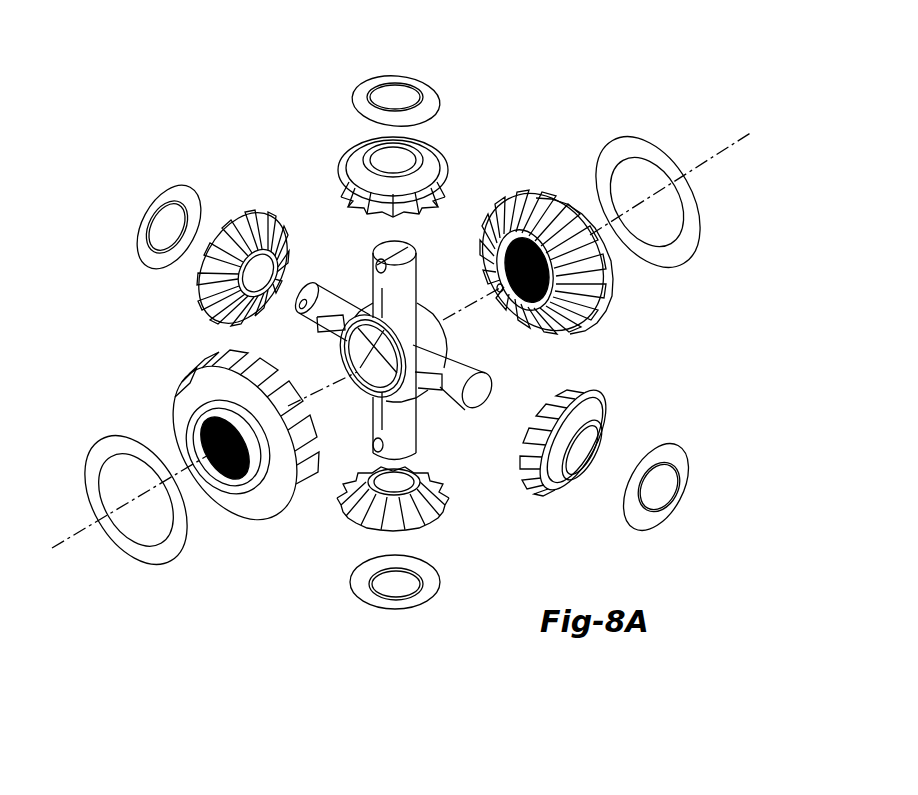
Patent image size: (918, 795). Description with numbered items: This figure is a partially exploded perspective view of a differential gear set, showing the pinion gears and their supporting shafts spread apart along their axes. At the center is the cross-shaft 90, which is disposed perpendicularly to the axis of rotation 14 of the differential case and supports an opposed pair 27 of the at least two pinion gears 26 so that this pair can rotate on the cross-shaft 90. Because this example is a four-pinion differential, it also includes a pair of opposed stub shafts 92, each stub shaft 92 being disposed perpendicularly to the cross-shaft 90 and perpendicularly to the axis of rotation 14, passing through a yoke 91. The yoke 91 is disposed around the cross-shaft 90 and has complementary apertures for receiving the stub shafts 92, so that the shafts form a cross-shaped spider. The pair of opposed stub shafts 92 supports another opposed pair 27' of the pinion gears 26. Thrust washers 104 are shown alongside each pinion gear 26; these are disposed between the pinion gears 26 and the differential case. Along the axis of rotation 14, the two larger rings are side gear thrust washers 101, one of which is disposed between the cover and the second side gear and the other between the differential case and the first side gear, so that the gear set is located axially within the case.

The axis of rotation 14 is at (72, 536).
The pinion gear 26 is at (425, 160).
The opposed pair of pinion gears 27 is at (379, 349).
The another opposed pair of pinion gears 27' is at (423, 355).
The cross-shaft 90 is at (460, 372).
The yoke 91 is at (352, 362).
The stub shaft 92 is at (408, 278).
The side gear thrust washer 101 is at (636, 142).
The thrust washer 104 is at (393, 76).